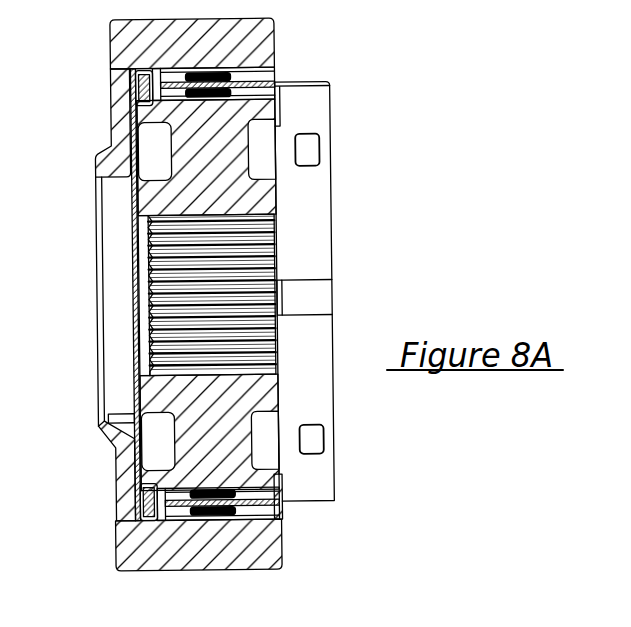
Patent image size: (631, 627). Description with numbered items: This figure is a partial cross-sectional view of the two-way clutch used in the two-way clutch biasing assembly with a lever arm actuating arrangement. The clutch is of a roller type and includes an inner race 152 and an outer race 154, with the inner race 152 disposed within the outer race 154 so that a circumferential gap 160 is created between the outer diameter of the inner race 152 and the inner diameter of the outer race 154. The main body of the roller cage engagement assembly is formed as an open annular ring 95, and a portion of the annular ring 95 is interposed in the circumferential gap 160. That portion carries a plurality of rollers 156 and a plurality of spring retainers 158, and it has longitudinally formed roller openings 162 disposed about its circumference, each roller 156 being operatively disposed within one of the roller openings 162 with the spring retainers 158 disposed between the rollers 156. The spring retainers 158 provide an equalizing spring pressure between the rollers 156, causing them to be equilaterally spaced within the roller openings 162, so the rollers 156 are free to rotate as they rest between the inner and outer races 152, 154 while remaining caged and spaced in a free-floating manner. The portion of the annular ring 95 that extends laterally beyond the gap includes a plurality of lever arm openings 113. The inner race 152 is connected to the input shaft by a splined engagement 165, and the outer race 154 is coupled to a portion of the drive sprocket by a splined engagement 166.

The outer race 154 is at (113, 27).
The inner race 152 is at (262, 198).
The splined engagement 165 is at (272, 253).
The rollers 156 is at (276, 85).
The circumferential gap 160 is at (155, 79).
The spring retainers 158 is at (209, 513).
The roller openings 162 is at (187, 512).
The splined engagement 166 is at (123, 413).
The annular ring 95 is at (319, 84).
The lever arm openings 113 is at (312, 153).